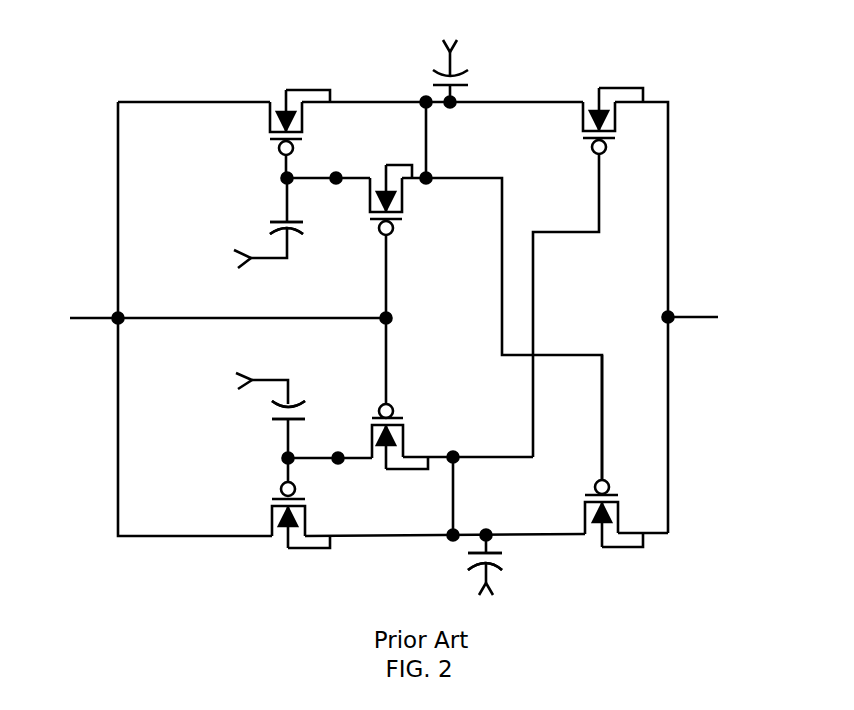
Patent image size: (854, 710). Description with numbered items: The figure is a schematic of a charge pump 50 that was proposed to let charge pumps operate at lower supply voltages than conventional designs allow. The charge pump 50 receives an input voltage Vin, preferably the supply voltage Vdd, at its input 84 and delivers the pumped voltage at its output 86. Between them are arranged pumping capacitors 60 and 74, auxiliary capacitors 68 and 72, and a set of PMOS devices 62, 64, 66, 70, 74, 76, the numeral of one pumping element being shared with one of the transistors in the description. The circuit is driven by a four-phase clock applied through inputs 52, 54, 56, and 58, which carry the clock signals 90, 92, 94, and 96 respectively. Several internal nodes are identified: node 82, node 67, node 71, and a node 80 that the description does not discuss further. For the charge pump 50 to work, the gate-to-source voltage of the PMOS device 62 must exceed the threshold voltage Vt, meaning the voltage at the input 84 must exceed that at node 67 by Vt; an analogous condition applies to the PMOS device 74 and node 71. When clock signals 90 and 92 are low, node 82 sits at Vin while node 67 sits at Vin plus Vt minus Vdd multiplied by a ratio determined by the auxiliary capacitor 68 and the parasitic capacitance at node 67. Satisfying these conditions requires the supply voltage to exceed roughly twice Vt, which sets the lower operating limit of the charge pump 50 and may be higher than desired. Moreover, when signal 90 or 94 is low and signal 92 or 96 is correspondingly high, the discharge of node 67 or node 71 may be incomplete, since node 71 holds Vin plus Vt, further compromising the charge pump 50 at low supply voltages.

The charge pump 50 is at (700, 38).
The clock signal input 52 is at (497, 590).
The clock signal input 54 is at (243, 373).
The clock signal input 56 is at (445, 45).
The clock signal input 58 is at (246, 266).
The pumping capacitor 60 is at (444, 553).
The PMOS device 62 is at (235, 523).
The PMOS device 64 is at (556, 522).
The PMOS device 66 is at (437, 435).
The node 67 is at (341, 463).
The auxiliary capacitor 68 is at (330, 413).
The PMOS device 70 is at (430, 195).
The node 71 is at (340, 176).
The auxiliary capacitor 72 is at (248, 228).
The PMOS device 74 is at (243, 115).
The PMOS device 76 is at (546, 122).
The node 80 is at (423, 106).
The node 82 is at (450, 530).
The input 84 is at (105, 325).
The output 86 is at (683, 320).
The clock signal 90 is at (486, 599).
The clock signal 92 is at (204, 389).
The clock signal 94 is at (449, 33).
The clock signal 96 is at (203, 266).